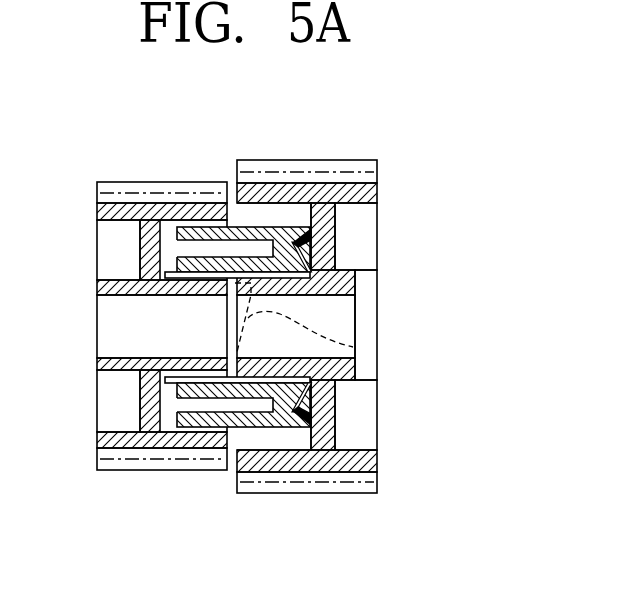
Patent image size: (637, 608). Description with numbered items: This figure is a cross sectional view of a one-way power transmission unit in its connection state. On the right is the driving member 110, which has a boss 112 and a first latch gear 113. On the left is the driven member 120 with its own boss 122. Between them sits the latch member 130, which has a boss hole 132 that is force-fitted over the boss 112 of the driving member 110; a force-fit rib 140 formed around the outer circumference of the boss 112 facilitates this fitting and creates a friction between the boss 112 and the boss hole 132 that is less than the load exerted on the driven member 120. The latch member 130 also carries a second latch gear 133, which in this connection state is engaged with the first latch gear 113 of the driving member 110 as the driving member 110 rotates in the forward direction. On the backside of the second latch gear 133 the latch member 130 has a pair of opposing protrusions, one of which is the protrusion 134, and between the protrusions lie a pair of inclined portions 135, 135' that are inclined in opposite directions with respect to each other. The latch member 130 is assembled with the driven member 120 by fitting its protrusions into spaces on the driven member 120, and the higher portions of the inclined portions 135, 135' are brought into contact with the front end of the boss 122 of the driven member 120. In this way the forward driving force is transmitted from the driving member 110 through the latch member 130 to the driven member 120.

The driving member 110 is at (348, 322).
The boss 112 is at (262, 366).
The first latch gear 113 is at (341, 189).
The driven member 120 is at (141, 315).
The boss 122 is at (170, 360).
The latch member 130 is at (252, 187).
The boss hole 132 is at (212, 275).
The second latch gear 133 is at (297, 240).
The protrusion 134 is at (200, 424).
The inclined portion 135 is at (346, 320).
The inclined portion 135' is at (378, 334).
The force-fit rib 140 is at (230, 274).